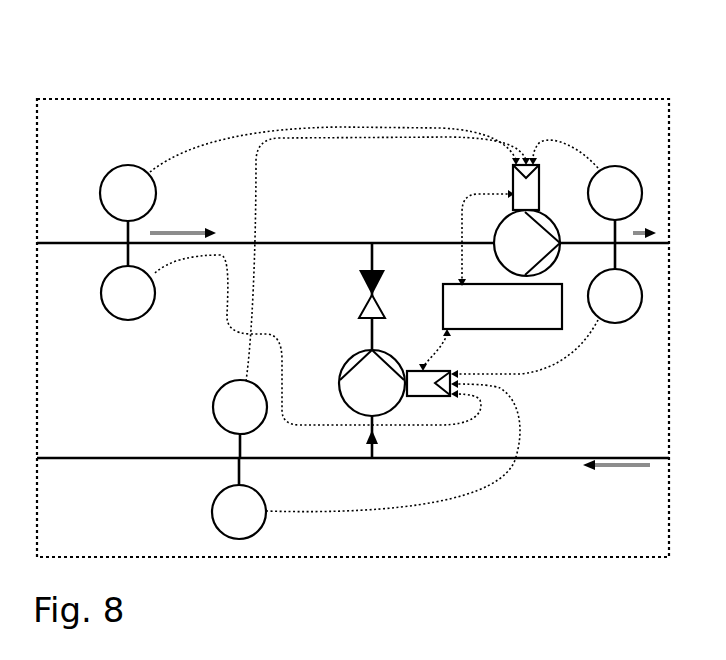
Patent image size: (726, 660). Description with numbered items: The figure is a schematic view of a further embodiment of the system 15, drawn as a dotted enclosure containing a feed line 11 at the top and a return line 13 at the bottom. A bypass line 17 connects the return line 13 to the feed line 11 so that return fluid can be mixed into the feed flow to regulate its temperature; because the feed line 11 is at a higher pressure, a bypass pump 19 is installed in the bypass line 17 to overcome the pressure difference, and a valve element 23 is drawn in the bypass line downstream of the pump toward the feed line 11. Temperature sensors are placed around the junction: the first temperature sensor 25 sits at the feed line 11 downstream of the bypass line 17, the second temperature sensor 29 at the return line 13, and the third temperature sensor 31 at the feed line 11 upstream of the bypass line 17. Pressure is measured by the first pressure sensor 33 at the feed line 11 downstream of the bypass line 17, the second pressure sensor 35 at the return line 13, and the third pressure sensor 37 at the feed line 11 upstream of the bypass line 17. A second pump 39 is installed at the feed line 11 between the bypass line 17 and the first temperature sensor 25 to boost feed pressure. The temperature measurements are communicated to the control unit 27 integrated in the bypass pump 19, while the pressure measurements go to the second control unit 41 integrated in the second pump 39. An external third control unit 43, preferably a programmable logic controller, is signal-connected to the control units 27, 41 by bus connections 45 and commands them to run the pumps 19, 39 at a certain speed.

The system 15 is at (128, 83).
The feed line 11 is at (90, 250).
The return line 13 is at (107, 463).
The bypass line 17 is at (372, 446).
The bypass pump 19 is at (372, 383).
The differential pressure sensor 23 is at (360, 298).
The first temperature sensor 25 is at (612, 330).
The control unit 27 is at (420, 402).
The second temperature sensor 29 is at (203, 511).
The third temperature sensor 31 is at (118, 325).
The first pressure sensor 33 is at (630, 169).
The second pressure sensor 35 is at (205, 411).
The third pressure sensor 37 is at (107, 173).
The second pump 39 is at (527, 243).
The second control unit 41 is at (500, 168).
The third control unit 43 is at (502, 306).
The bus connections 45 is at (455, 216).